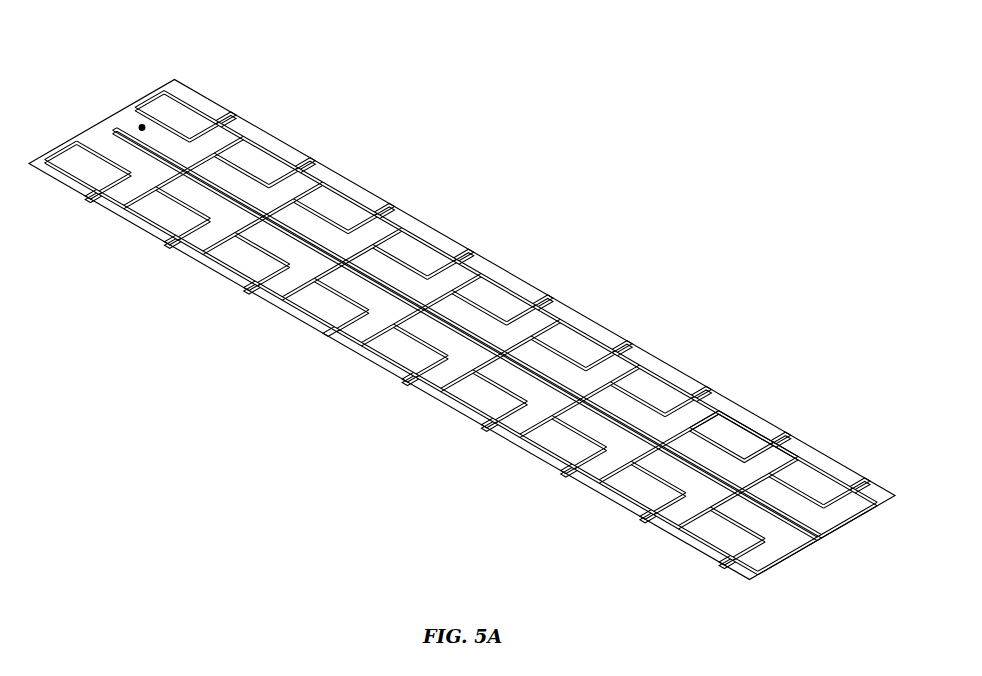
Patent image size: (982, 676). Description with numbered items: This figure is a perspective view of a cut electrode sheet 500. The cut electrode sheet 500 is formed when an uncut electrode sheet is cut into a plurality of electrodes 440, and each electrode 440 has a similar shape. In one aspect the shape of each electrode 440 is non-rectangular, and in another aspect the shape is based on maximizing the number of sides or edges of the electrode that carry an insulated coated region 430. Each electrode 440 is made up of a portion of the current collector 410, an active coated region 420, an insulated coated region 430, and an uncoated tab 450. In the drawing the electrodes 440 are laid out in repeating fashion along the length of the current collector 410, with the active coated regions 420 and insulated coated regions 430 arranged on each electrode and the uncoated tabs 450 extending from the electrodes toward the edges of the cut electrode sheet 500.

The cut electrode sheet 500 is at (160, 34).
The current collector 410 is at (517, 258).
The active coated region 420 is at (142, 127).
The insulated coated region 430 is at (793, 442).
The electrode 440 is at (725, 442).
The uncoated tab 450 is at (632, 344).